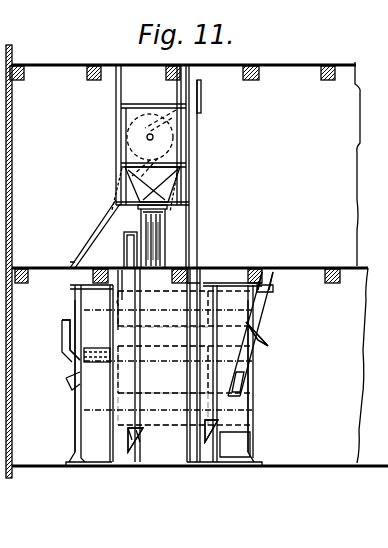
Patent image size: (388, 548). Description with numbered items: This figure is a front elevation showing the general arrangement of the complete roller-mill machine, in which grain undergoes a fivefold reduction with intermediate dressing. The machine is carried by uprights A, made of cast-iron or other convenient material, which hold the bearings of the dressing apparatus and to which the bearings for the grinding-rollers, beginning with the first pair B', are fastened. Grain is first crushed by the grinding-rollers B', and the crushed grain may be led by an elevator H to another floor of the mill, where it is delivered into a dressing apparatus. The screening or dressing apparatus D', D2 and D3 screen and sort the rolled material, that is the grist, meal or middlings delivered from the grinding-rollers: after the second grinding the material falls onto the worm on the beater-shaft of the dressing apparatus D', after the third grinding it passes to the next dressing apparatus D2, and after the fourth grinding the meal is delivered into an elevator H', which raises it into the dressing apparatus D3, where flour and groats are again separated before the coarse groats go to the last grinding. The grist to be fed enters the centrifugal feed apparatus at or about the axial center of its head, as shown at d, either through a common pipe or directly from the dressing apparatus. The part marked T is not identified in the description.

The dressing apparatus D3 is at (163, 309).
The dressing apparatus D' is at (163, 369).
The dressing apparatus D2 is at (163, 409).
The elevator H' is at (146, 440).
The elevator H is at (192, 435).
The upright A is at (81, 437).
The grinding-rollers B' is at (56, 346).
The grist inlet d is at (270, 290).
The trough T is at (255, 351).